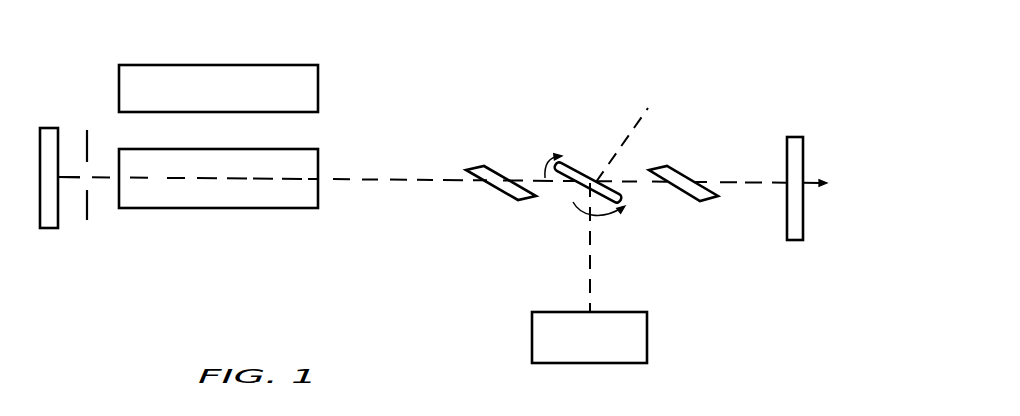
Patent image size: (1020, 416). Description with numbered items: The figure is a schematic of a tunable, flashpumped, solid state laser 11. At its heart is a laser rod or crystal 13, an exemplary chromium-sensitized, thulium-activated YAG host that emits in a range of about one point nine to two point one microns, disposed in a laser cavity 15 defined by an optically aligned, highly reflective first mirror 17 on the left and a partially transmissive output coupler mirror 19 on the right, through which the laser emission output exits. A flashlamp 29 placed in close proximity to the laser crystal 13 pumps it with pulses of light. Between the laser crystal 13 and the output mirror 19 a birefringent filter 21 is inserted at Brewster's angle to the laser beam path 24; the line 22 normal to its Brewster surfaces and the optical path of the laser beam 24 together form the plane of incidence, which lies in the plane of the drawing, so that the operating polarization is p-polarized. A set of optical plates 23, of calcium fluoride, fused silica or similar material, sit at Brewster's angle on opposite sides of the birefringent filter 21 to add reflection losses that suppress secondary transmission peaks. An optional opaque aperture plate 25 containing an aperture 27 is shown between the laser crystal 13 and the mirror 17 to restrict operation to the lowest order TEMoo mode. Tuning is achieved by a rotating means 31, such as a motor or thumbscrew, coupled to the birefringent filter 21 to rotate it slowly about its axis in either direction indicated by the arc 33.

The tunable solid state laser 11 is at (506, 43).
The laser crystal 13 is at (318, 160).
The laser cavity 15 is at (531, 159).
The first reflective element or mirror 17 is at (58, 138).
The output coupler mirror 19 is at (787, 152).
The birefringent filter 21 is at (573, 167).
The line normal to the Brewster surfaces 22 is at (626, 132).
The optical plates 23 is at (673, 188).
The optical path of the laser beam 24 is at (755, 182).
The aperture plate 25 is at (95, 195).
The aperture 27 is at (80, 182).
The flashlamp 29 is at (205, 65).
The rotating means 31 is at (647, 320).
The arc 33 is at (574, 203).